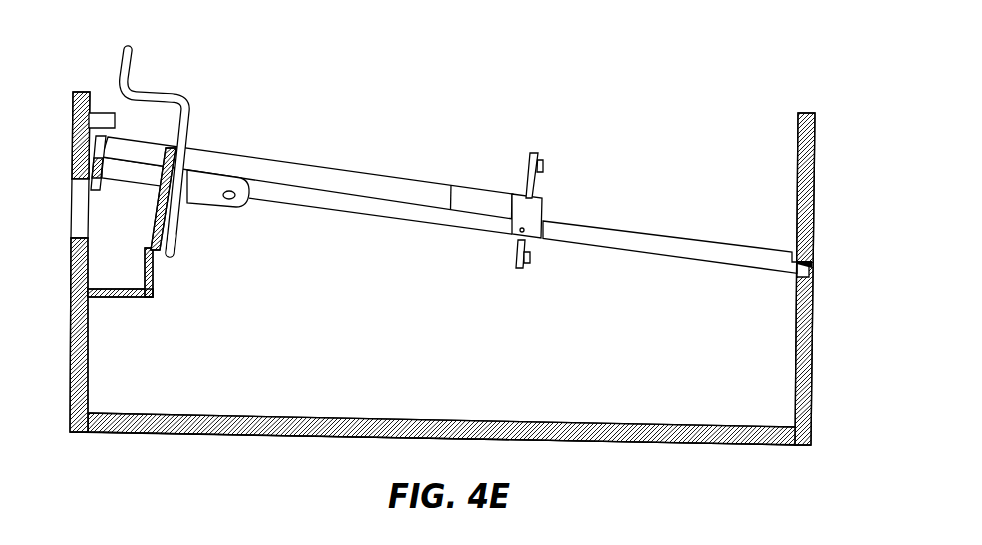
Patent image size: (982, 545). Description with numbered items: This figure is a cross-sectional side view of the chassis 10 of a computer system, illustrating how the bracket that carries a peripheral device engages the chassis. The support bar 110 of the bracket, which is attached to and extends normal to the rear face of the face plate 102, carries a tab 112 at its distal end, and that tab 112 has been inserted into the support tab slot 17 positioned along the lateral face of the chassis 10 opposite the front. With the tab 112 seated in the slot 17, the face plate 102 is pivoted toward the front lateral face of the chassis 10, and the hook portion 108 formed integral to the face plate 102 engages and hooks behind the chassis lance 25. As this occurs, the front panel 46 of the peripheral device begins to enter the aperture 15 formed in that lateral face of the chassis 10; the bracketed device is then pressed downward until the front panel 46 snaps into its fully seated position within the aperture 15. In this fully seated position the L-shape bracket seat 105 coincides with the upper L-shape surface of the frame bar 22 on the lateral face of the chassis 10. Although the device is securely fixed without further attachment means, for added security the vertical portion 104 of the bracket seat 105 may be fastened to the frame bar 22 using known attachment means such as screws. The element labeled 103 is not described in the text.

The chassis 10 is at (436, 241).
The aperture 15 is at (76, 211).
The support tab slot 17 is at (812, 259).
The frame bar 22 is at (114, 125).
The chassis lance 25 is at (147, 274).
The front panel 46 is at (96, 162).
The face plate 102 is at (176, 259).
The rod 103 is at (190, 93).
The vertical portion 104 is at (134, 63).
The bracket seat 105 is at (191, 158).
The hook portion 108 is at (160, 200).
The support bar 110 is at (417, 181).
The tab 112 is at (793, 279).